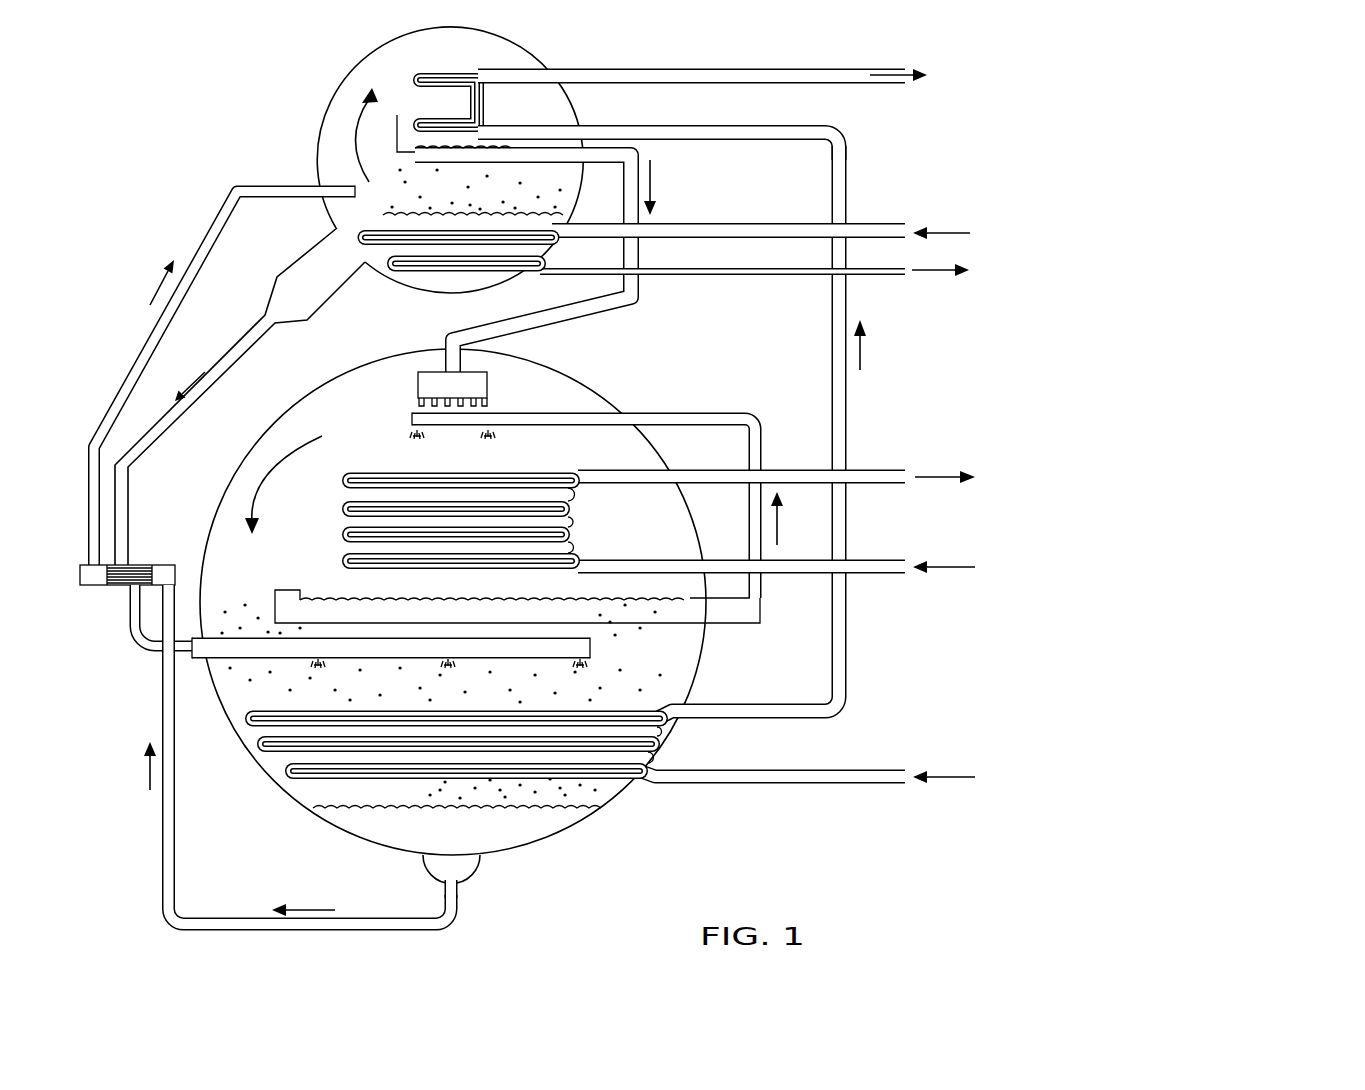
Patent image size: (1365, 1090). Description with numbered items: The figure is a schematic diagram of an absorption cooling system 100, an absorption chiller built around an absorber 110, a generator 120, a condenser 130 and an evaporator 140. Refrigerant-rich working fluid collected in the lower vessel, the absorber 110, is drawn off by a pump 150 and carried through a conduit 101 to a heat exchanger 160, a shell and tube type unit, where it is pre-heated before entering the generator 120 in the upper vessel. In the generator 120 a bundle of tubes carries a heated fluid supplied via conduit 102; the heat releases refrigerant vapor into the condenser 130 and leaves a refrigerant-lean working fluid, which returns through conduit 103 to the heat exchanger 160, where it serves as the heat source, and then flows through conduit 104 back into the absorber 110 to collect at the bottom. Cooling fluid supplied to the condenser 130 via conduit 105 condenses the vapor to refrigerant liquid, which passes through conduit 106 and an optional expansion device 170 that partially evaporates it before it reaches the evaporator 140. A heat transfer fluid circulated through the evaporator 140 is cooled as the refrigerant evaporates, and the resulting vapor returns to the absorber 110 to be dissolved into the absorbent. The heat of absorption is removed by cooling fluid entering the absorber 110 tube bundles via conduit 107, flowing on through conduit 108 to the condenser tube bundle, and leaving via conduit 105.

The absorption cooling system 100 is at (1237, 94).
The conduit 101 is at (162, 823).
The conduit 102 is at (880, 226).
The conduit 103 is at (232, 372).
The conduit 104 is at (218, 660).
The conduit 105 is at (802, 125).
The conduit 106 is at (637, 155).
The conduit 107 is at (876, 770).
The conduit 108 is at (848, 423).
The absorber 110 is at (603, 790).
The generator 120 is at (417, 150).
The condenser 130 is at (424, 73).
The evaporator 140 is at (530, 462).
The pump 150 is at (462, 908).
The heat exchanger 160 is at (122, 586).
The expansion device 170 is at (488, 378).